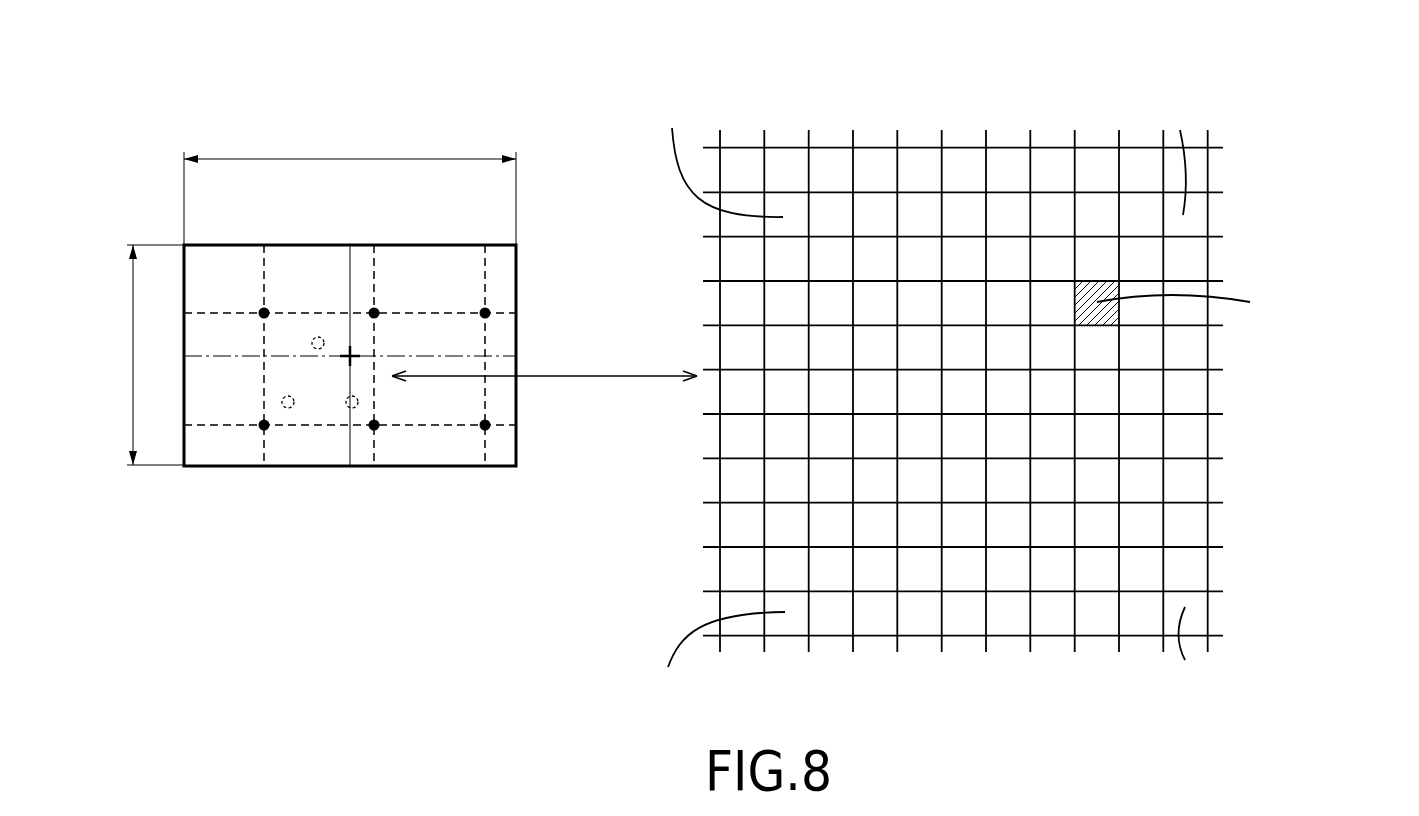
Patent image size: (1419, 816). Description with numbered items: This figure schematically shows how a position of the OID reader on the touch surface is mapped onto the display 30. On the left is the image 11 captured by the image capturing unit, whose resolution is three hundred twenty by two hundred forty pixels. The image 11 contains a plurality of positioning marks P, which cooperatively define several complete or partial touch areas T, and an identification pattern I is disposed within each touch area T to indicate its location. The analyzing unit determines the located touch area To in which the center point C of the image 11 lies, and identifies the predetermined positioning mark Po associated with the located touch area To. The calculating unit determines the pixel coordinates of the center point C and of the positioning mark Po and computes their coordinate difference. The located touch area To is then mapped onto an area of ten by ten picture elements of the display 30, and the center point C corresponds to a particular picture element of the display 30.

The image 11 is at (516, 287).
The display 30 is at (1017, 125).
The center point C is at (347, 352).
The positioning marks P is at (376, 311).
The positioning mark Po is at (263, 314).
The located touch area To is at (302, 412).
The identification pattern I is at (320, 352).
The touch areas T is at (467, 415).